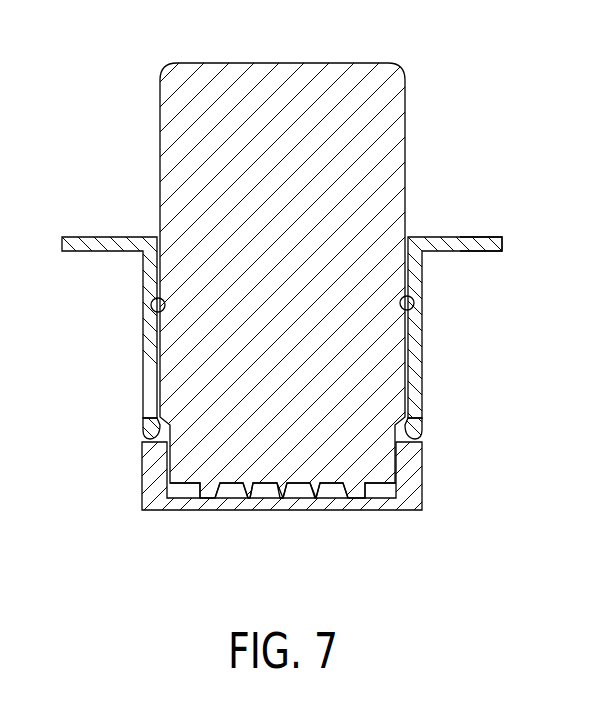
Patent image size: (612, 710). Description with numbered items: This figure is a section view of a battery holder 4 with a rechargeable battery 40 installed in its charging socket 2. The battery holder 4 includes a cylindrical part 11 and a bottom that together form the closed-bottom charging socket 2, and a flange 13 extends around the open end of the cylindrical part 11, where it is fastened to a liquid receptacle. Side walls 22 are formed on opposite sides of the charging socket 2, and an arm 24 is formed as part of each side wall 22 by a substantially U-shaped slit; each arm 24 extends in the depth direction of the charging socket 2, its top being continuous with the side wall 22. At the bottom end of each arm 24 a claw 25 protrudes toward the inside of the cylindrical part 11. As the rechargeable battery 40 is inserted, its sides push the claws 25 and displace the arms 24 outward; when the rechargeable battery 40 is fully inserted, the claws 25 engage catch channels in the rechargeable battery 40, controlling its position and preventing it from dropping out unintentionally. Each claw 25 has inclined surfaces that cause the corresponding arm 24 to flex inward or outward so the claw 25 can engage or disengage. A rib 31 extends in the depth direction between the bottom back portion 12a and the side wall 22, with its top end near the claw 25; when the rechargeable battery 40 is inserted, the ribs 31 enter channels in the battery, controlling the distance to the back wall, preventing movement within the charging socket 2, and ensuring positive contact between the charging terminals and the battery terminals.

The charging socket 2 is at (146, 226).
The battery holder 4 is at (493, 237).
The cylindrical part 11 is at (292, 470).
The bottom back portion 12a is at (278, 511).
The flange 13 is at (306, 280).
The side wall 22 is at (152, 309).
The arm 24 is at (150, 388).
The claw 25 is at (148, 432).
The rib 31 is at (152, 480).
The rechargeable battery 40 is at (285, 63).